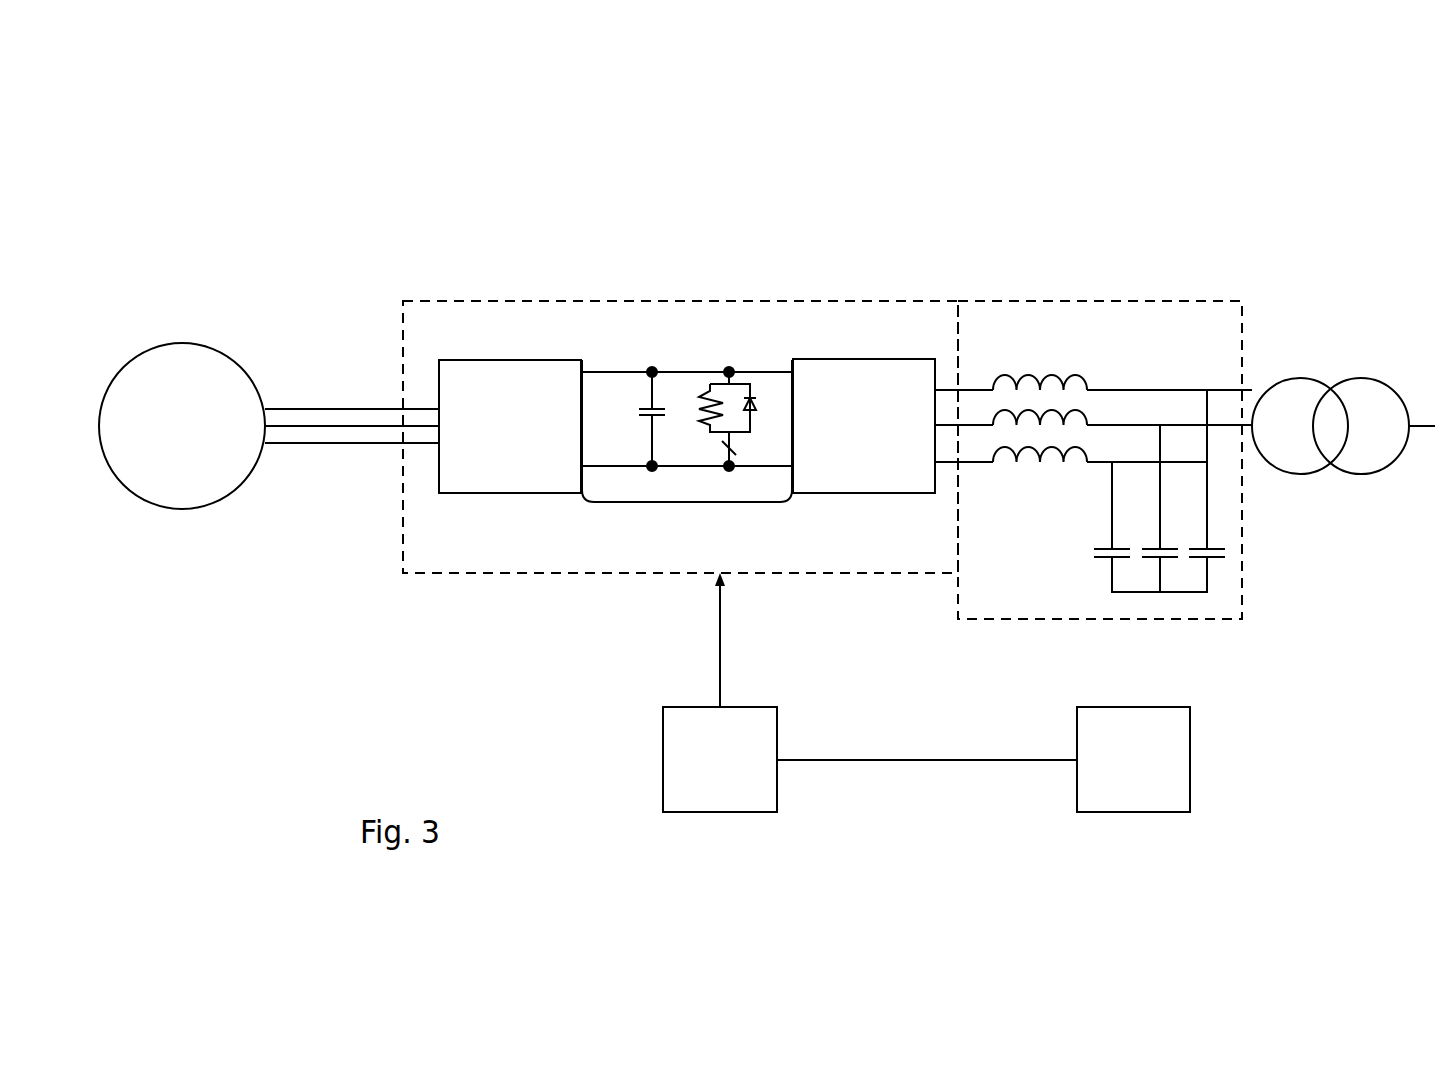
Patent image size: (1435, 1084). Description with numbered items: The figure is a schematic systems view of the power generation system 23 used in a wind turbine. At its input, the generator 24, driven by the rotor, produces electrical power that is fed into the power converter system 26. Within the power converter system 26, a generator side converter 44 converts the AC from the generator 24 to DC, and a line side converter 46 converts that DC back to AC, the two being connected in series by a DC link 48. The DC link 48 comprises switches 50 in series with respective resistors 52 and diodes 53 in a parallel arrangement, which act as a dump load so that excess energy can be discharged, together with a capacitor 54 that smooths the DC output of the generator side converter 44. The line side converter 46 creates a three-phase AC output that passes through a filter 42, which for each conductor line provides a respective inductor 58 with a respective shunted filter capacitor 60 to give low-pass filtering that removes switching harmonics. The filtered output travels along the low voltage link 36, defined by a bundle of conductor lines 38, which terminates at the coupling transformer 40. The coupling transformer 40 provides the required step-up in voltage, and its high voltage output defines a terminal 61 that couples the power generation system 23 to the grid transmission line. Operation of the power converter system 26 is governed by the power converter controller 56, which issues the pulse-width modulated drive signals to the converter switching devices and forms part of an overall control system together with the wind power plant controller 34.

The power generation system 23 is at (1131, 239).
The generator 24 is at (182, 426).
The power converter system 26 is at (430, 301).
The wind power plant controller 34 is at (1133, 759).
The low voltage link 36 is at (1256, 480).
The conductor lines 38 is at (1253, 389).
The coupling transformer 40 is at (1300, 378).
The filter 42 is at (1182, 620).
The generator side converter 44 is at (510, 426).
The line side converter 46 is at (864, 426).
The DC link 48 is at (672, 502).
The switches 50 is at (736, 455).
The resistors 52 is at (699, 390).
The diodes 53 is at (759, 398).
The capacitor 54 is at (639, 405).
The power converter controller 56 is at (720, 692).
The inductor 58 is at (1037, 470).
The filter capacitor 60 is at (1100, 564).
The terminal 61 is at (1428, 418).